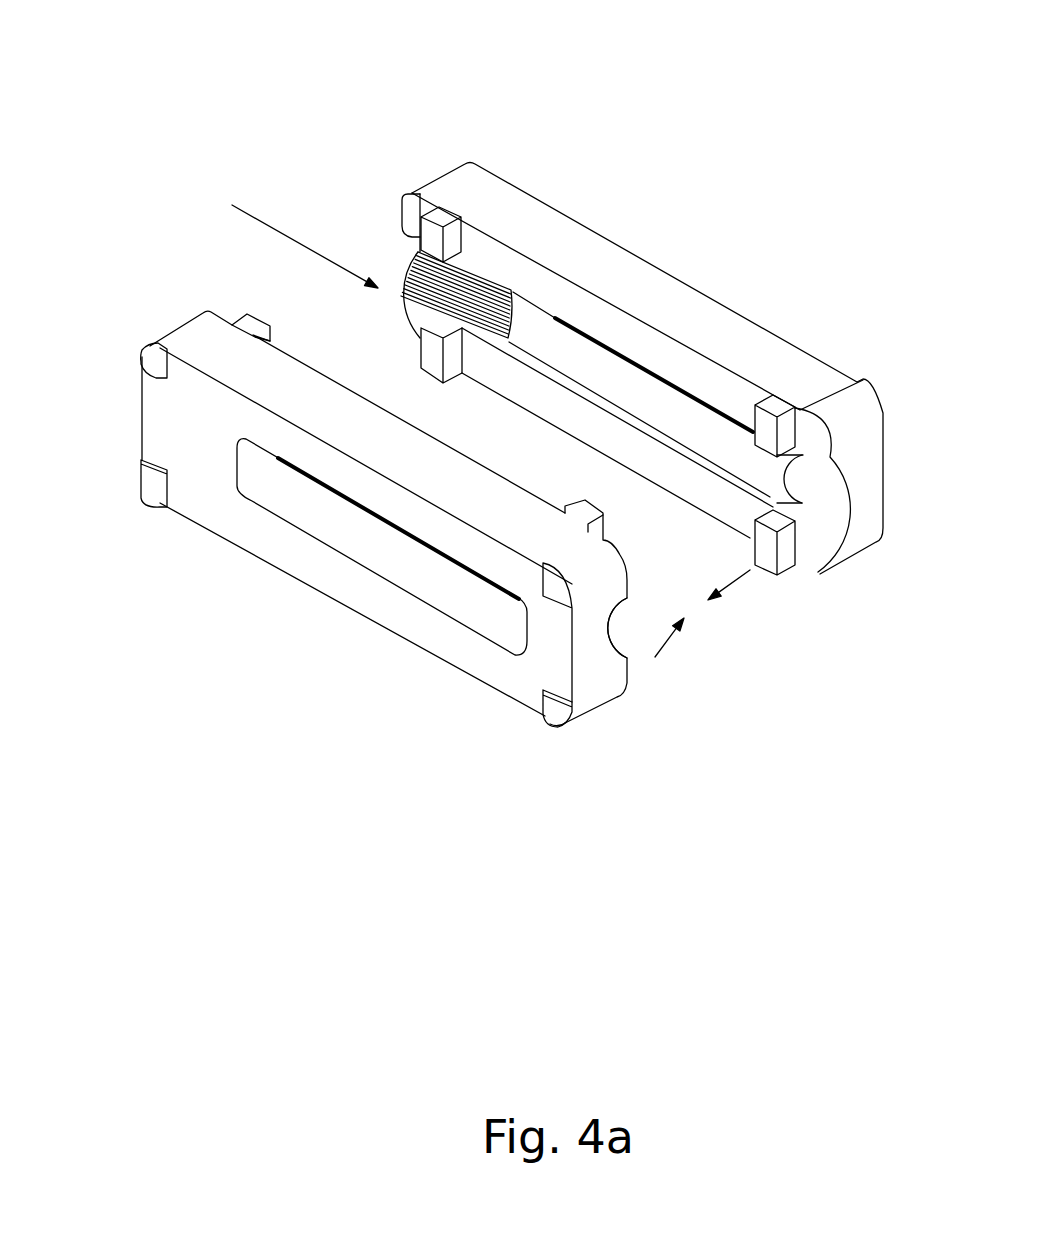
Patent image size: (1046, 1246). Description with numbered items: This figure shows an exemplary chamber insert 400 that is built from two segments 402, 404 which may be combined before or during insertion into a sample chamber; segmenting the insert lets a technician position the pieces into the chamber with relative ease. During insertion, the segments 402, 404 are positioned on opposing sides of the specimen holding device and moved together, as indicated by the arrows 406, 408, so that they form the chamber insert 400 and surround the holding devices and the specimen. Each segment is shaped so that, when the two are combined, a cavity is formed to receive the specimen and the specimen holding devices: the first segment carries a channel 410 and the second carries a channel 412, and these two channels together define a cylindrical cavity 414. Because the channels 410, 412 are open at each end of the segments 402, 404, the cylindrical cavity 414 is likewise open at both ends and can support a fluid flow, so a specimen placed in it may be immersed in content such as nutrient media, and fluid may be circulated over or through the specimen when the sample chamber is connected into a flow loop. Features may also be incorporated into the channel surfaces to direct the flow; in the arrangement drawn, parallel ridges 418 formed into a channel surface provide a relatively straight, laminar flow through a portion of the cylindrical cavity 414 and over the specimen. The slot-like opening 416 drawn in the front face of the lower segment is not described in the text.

The chamber insert 400 is at (702, 105).
The segment 402 is at (196, 437).
The segment 404 is at (760, 316).
The arrow 406 is at (754, 601).
The arrow 408 is at (679, 657).
The channel 410 is at (614, 624).
The channel 412 is at (770, 470).
The cylindrical cavity 414 is at (287, 231).
The slot opening 416 is at (412, 576).
The ridges 418 is at (418, 282).